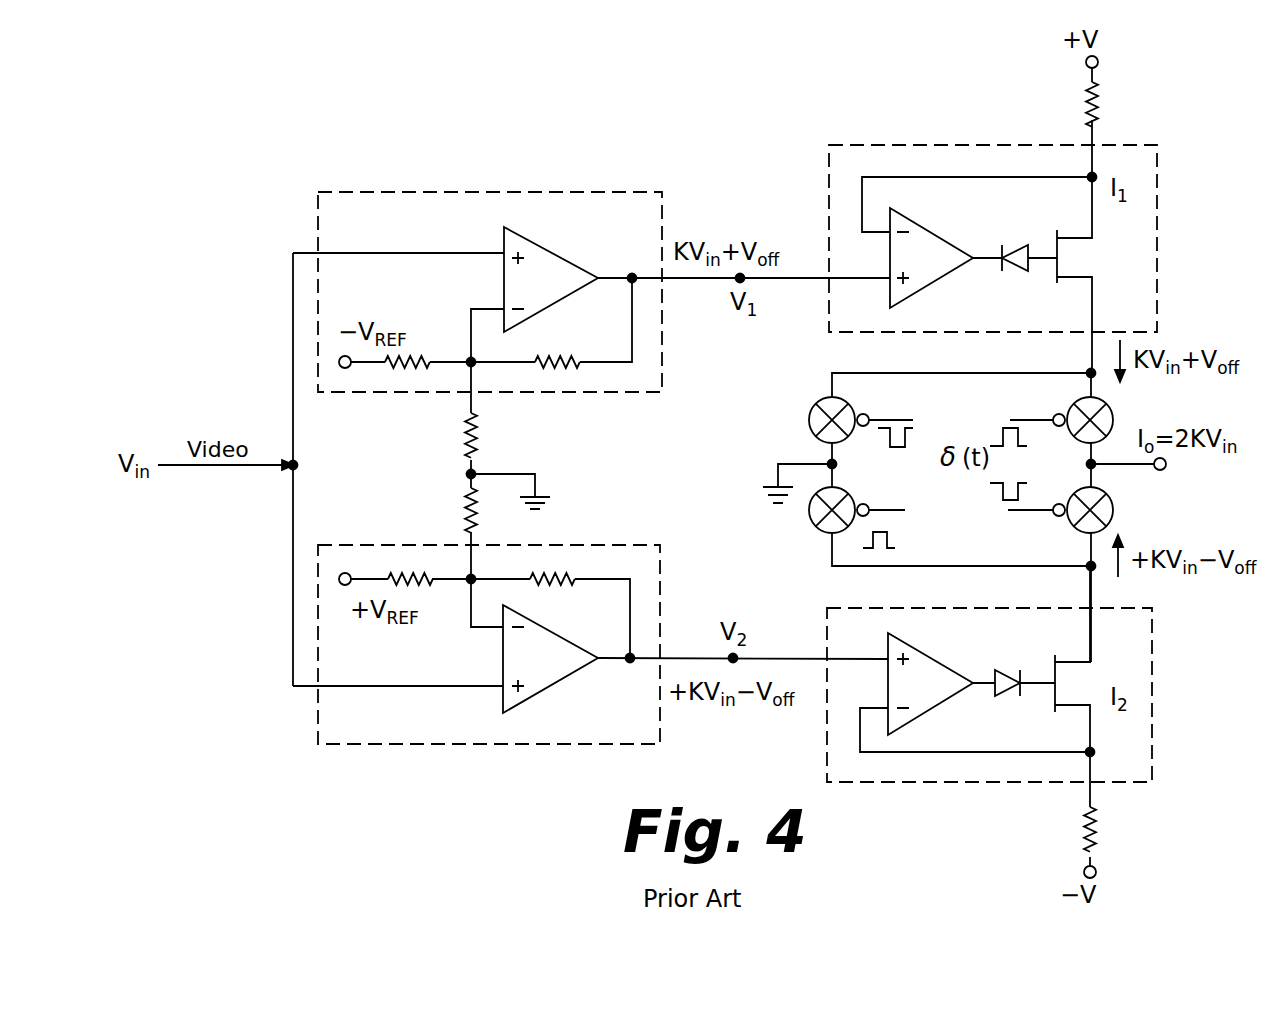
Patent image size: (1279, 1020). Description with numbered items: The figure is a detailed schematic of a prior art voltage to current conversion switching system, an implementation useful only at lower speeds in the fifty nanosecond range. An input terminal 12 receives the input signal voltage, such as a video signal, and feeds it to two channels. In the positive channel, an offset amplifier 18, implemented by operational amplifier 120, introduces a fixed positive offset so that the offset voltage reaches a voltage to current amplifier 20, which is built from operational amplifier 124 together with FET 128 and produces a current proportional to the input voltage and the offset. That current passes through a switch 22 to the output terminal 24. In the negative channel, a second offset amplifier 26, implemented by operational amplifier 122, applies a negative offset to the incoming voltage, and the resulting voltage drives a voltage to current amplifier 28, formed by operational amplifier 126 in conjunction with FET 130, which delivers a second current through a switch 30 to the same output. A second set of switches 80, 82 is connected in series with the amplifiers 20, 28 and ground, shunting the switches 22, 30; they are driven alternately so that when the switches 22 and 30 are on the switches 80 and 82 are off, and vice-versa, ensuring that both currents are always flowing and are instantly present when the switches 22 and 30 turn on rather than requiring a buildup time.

The input terminal 12 is at (288, 470).
The offset amplifier 18 is at (383, 188).
The voltage to current amplifier 20 is at (1158, 250).
The switch 22 is at (1065, 405).
The output terminal 24 is at (1166, 470).
The second offset amplifier 26 is at (348, 748).
The voltage to current amplifier 28 is at (1152, 688).
The switch 30 is at (1068, 528).
The switch 80 is at (806, 423).
The switch 82 is at (811, 519).
The operational amplifier 120 is at (552, 248).
The operational amplifier 122 is at (550, 690).
The operational amplifier 124 is at (928, 226).
The operational amplifier 126 is at (933, 712).
The FET 128 is at (1075, 232).
The FET 130 is at (1072, 707).